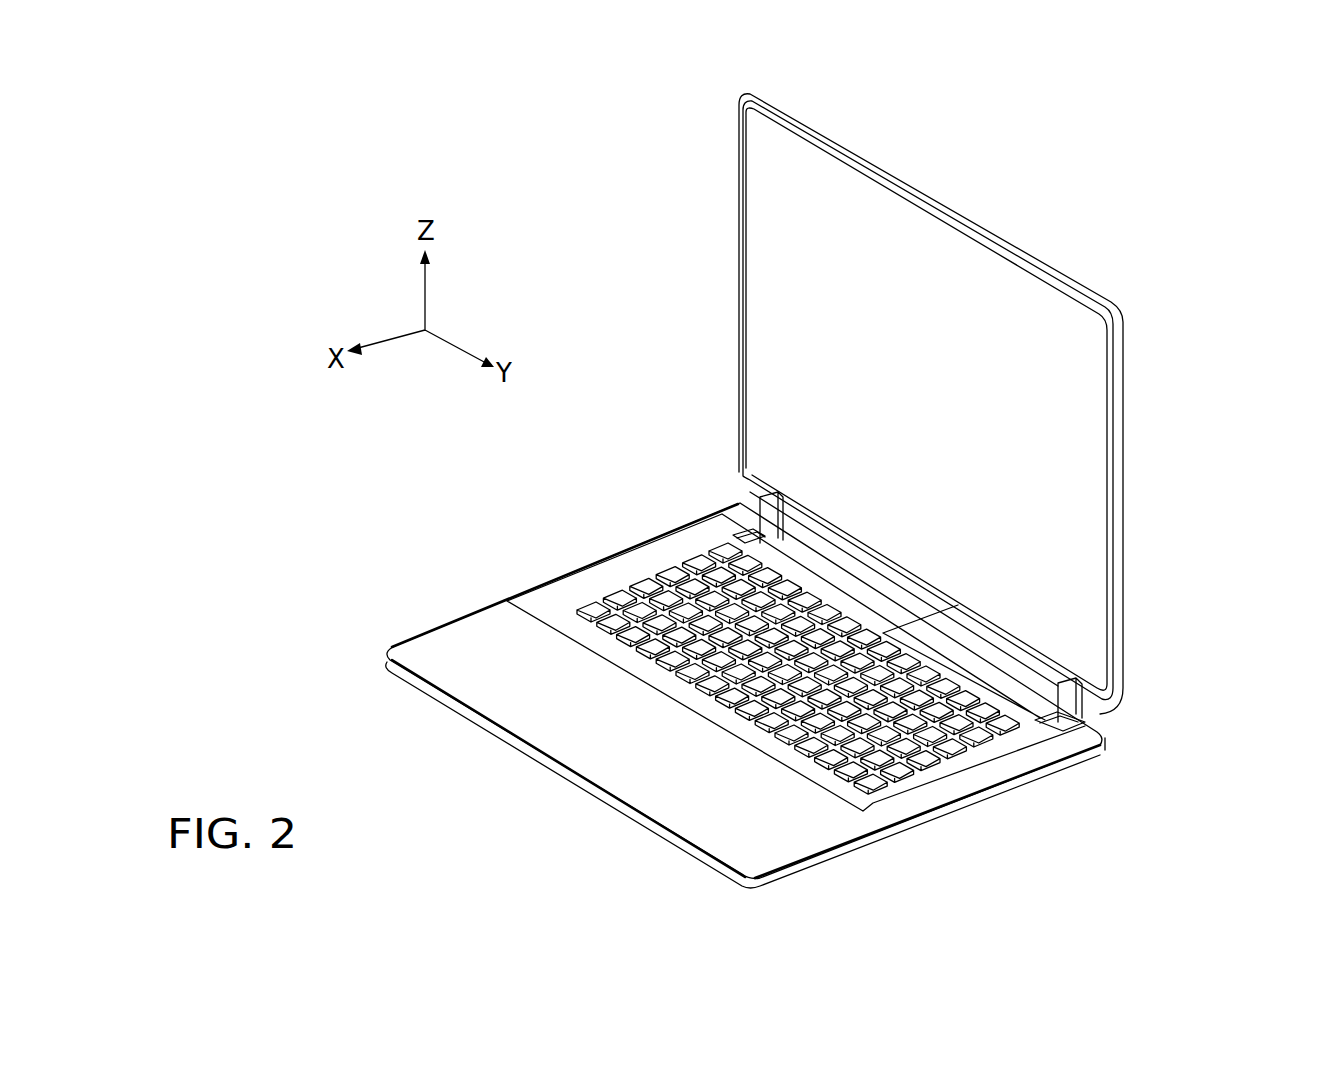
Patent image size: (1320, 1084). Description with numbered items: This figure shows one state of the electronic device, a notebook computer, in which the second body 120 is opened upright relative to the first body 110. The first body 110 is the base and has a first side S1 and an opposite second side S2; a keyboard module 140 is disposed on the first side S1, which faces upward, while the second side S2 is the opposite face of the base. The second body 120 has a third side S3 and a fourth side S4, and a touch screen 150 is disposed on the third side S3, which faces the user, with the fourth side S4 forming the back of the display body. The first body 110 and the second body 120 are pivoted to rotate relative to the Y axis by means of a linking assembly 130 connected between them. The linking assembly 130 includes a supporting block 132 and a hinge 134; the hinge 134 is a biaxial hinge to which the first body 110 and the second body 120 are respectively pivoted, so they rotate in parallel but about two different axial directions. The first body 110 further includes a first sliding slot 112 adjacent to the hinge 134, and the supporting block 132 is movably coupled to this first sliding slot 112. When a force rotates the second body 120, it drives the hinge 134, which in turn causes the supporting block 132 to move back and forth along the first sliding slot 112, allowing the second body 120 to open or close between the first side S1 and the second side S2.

The first body 110 is at (828, 852).
The first sliding slot 112 is at (752, 528).
The second body 120 is at (1123, 523).
The linking assembly 130 is at (1158, 746).
The supporting block 132 is at (1047, 728).
The hinge 134 is at (1070, 716).
The keyboard module 140 is at (592, 610).
The touch screen 150 is at (1080, 446).
The first side S1 is at (647, 566).
The second side S2 is at (908, 834).
The third side S3 is at (756, 191).
The fourth side S4 is at (1130, 405).